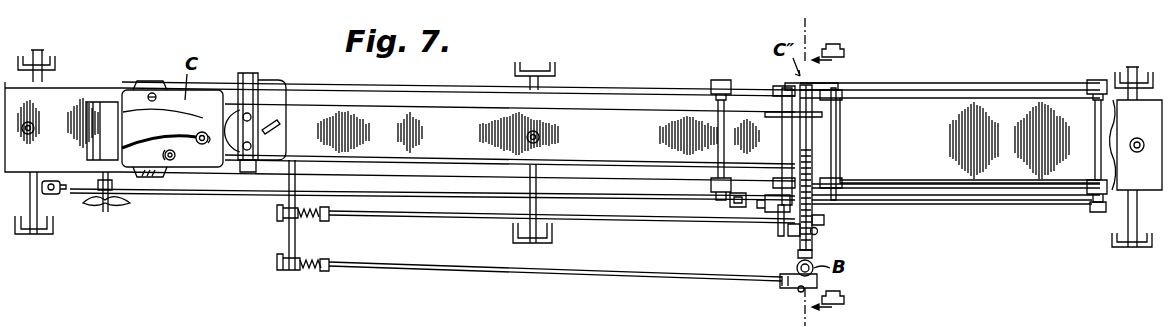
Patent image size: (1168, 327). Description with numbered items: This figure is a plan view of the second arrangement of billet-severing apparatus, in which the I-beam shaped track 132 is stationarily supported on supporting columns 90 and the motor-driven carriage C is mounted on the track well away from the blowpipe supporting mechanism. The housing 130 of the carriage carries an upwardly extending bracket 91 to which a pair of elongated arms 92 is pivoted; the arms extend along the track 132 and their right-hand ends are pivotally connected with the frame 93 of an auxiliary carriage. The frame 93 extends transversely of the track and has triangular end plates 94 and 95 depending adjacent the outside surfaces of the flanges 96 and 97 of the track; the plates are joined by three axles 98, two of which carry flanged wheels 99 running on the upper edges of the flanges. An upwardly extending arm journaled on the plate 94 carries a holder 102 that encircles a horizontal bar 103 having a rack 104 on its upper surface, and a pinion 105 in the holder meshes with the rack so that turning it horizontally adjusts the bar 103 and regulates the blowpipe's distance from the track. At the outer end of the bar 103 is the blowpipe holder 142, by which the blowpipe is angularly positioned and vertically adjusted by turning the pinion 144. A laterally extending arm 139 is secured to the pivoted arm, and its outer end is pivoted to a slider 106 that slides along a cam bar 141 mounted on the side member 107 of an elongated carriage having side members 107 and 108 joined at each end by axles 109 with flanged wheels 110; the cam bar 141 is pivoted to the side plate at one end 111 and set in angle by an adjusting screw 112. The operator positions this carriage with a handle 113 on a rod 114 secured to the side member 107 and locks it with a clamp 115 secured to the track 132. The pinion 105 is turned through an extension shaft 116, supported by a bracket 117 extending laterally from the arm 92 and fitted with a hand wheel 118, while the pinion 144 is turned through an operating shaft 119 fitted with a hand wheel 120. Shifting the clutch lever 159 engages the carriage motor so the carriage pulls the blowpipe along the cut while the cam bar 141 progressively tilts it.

The supporting columns 90 is at (55, 62).
The upwardly extending bracket 91 is at (246, 175).
The elongated arms 92 is at (437, 120).
The frame 93 is at (812, 141).
The triangular end plate 94 is at (820, 212).
The triangular end plate 95 is at (822, 86).
The flange 96 is at (1012, 186).
The flange 97 is at (940, 98).
The axles 98 is at (784, 140).
The flanged wheels 99 is at (780, 88).
The holder 102 is at (813, 234).
The horizontal bar 103 is at (800, 236).
The rack 104 is at (800, 254).
The pinion 105 is at (822, 226).
The slider 106 is at (770, 212).
The side member 107 is at (1038, 204).
The side member 108 is at (1020, 85).
The axles 109 is at (717, 140).
The flanged wheels 110 is at (712, 90).
The pivoted end 111 is at (1096, 208).
The adjusting screw 112 is at (737, 210).
The handle 113 is at (42, 187).
The rod 114 is at (164, 185).
The clamp 115 is at (97, 205).
The extension shaft 116 is at (447, 218).
The bracket 117 is at (296, 233).
The hand wheel 118 is at (275, 213).
The operating shaft 119 is at (556, 272).
The hand wheel 120 is at (276, 263).
The housing 130 is at (204, 165).
The I-beam shaped track 132 is at (68, 100).
The laterally extending arm 139 is at (776, 222).
The cam bar 141 is at (905, 196).
The blowpipe holder 142 is at (796, 268).
The pinion 144 is at (800, 290).
The clutch lever 159 is at (166, 139).